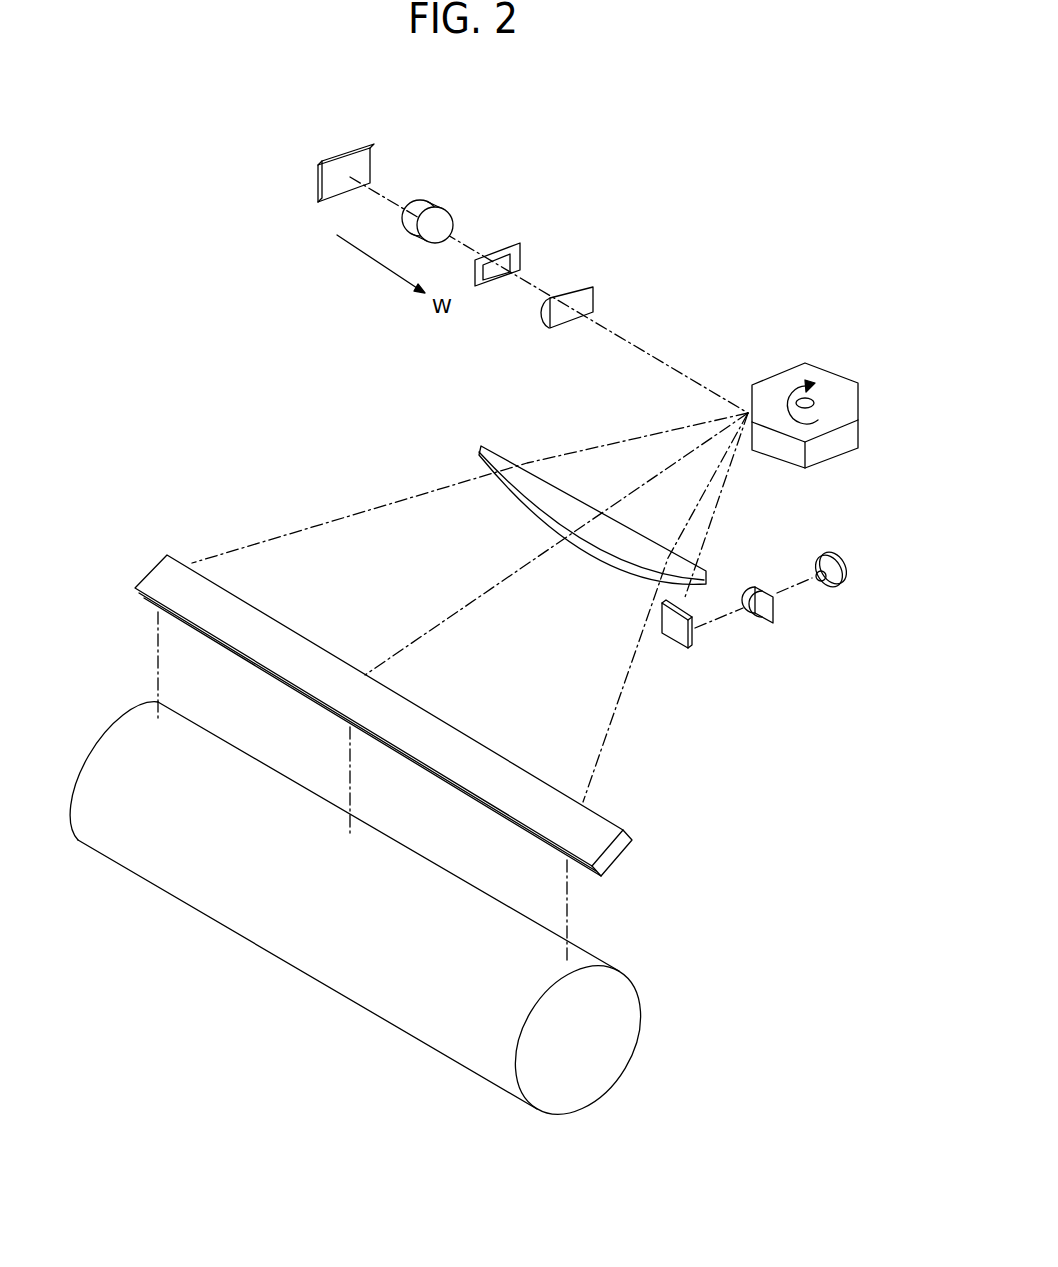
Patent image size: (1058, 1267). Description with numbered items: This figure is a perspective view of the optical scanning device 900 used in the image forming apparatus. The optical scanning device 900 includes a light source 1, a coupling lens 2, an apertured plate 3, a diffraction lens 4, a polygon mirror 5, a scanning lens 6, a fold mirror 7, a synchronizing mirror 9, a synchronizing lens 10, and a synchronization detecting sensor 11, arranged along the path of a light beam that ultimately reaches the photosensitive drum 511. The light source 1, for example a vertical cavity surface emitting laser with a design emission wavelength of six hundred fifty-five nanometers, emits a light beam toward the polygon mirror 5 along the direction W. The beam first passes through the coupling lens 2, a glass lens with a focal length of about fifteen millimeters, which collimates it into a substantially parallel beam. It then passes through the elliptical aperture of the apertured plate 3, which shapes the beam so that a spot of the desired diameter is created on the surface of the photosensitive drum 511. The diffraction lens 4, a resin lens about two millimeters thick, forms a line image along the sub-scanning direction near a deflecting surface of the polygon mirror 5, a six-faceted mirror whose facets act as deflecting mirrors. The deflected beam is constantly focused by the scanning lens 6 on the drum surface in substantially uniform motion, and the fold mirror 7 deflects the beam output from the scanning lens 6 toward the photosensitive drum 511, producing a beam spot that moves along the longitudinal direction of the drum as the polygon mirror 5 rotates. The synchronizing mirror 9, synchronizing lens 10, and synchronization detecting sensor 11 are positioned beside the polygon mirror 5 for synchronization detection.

The optical scanning device 900 is at (664, 161).
The light source 1 is at (375, 166).
The coupling lens 2 is at (453, 218).
The apertured plate 3 is at (520, 253).
The diffraction lens 4 is at (593, 291).
The polygon mirror 5 is at (827, 367).
The scanning lens 6 is at (507, 454).
The fold mirror 7 is at (180, 556).
The synchronizing mirror 9 is at (688, 652).
The synchronizing lens 10 is at (768, 625).
The synchronization detecting sensor 11 is at (838, 590).
The photosensitive drum 511 is at (642, 1012).